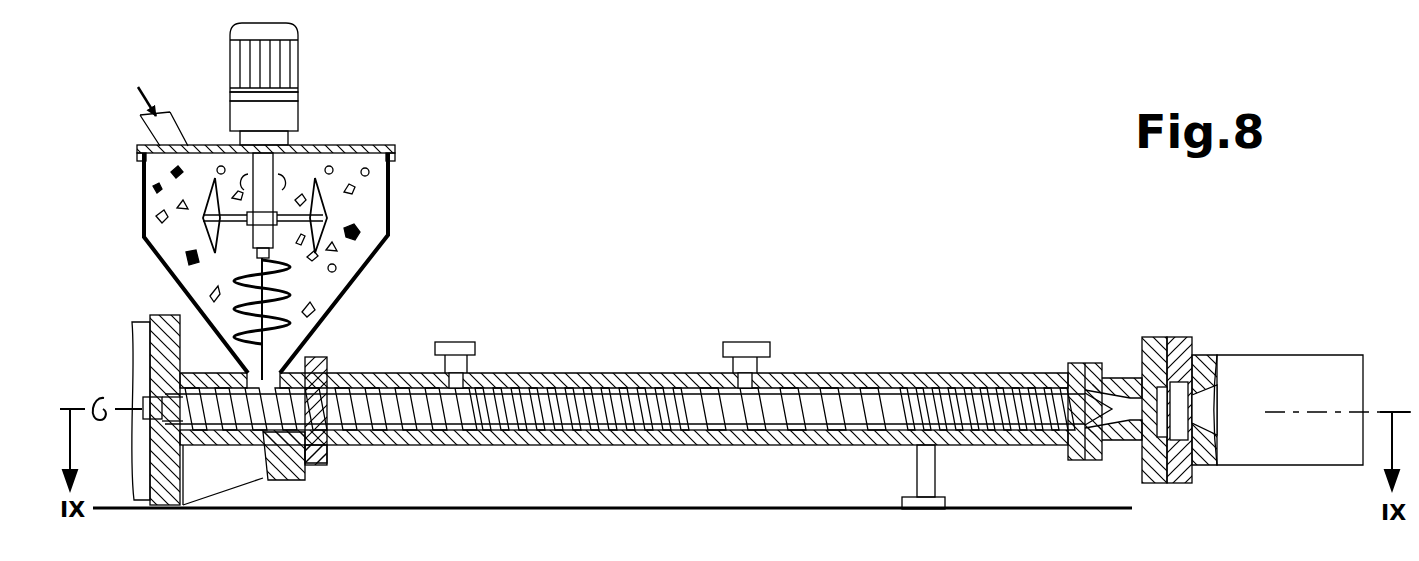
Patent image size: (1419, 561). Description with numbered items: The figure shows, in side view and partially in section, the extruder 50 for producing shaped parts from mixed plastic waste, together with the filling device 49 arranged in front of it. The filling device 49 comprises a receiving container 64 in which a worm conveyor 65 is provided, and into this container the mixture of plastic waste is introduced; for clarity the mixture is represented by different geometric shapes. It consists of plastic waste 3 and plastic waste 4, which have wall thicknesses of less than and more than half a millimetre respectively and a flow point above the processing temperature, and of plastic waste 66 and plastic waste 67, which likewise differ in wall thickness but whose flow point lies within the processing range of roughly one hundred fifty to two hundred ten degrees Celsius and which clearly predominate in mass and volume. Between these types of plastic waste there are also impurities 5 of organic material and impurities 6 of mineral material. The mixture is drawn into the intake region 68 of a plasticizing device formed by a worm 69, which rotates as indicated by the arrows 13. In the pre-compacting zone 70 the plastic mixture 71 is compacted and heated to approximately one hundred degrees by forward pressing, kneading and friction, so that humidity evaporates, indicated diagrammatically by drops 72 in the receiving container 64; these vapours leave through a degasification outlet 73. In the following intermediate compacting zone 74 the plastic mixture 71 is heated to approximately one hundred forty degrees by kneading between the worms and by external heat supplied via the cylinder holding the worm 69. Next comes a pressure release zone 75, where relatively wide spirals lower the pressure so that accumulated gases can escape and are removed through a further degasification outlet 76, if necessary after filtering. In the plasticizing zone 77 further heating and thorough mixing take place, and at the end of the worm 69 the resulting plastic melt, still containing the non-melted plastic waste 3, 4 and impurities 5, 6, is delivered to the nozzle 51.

The plastic waste 3 is at (174, 173).
The plastic waste 4 is at (219, 167).
The impurities 5 is at (156, 189).
The impurities 6 is at (212, 299).
The arrows 13 is at (94, 398).
The filling device 49 is at (462, 88).
The extruder 50 is at (671, 130).
The nozzle 51 is at (1284, 345).
The receiving container 64 is at (307, 259).
The worm conveyor 65 is at (310, 294).
The plastic waste 66 is at (157, 221).
The plastic waste 67 is at (227, 201).
The intake region 68 is at (216, 428).
The worm 69 is at (638, 405).
The pre-compacting zone 70 is at (400, 430).
The plastic mixture 71 is at (423, 388).
The drops 72 is at (181, 212).
The degasification outlet 73 is at (452, 372).
The intermediate compacting zone 74 is at (551, 435).
The pressure release zone 75 is at (776, 437).
The further degasification outlet 76 is at (746, 368).
The plasticizing zone 77 is at (905, 430).